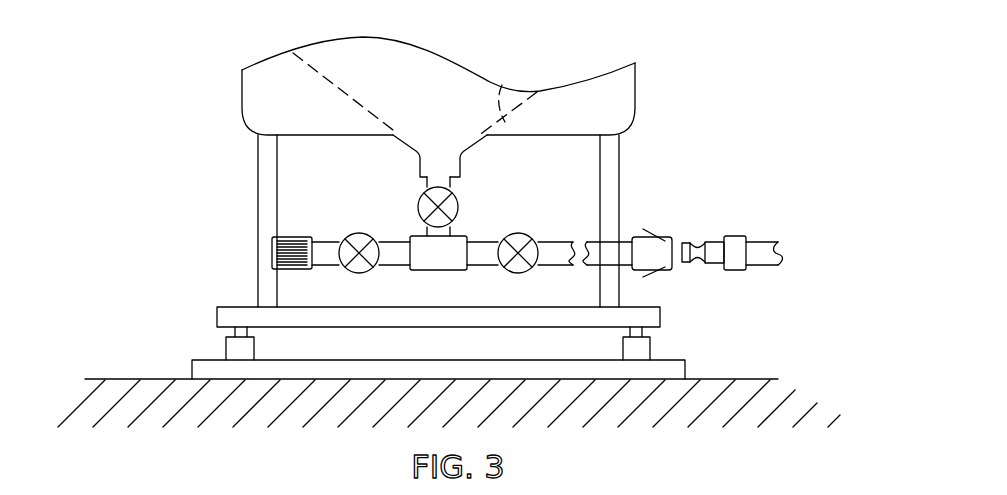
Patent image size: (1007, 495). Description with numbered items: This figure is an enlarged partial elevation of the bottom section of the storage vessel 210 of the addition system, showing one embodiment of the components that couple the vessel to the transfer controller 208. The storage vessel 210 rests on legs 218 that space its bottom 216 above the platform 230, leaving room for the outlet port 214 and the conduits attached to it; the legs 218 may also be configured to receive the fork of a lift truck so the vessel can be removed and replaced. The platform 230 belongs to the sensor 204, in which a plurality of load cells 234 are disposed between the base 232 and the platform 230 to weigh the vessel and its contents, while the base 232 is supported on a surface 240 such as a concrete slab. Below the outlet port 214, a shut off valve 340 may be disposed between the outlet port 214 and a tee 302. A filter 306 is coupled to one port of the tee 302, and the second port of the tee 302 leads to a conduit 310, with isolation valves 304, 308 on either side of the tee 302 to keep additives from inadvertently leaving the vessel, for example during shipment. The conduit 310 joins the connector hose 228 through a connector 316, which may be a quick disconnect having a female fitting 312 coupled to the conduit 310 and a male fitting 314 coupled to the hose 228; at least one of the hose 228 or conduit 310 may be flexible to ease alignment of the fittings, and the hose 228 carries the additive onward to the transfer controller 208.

The sensor 204 is at (434, 312).
The storage vessel 210 is at (636, 92).
The bottom 216 is at (507, 86).
The outlet port 214 is at (443, 185).
The shut off valve 340 is at (460, 210).
The legs 218 is at (265, 217).
The filter 306 is at (307, 235).
The isolation valve 304 is at (358, 232).
The tee 302 is at (423, 262).
The isolation valve 308 is at (515, 273).
The conduit 310 is at (598, 248).
The female fitting 312 is at (647, 248).
The connector 316 is at (655, 276).
The male fitting 314 is at (735, 242).
The connector hose 228 is at (758, 258).
The transfer controller 208 is at (783, 253).
The platform 230 is at (302, 320).
The load cells 234 is at (642, 348).
The base 232 is at (435, 360).
The surface 240 is at (747, 379).